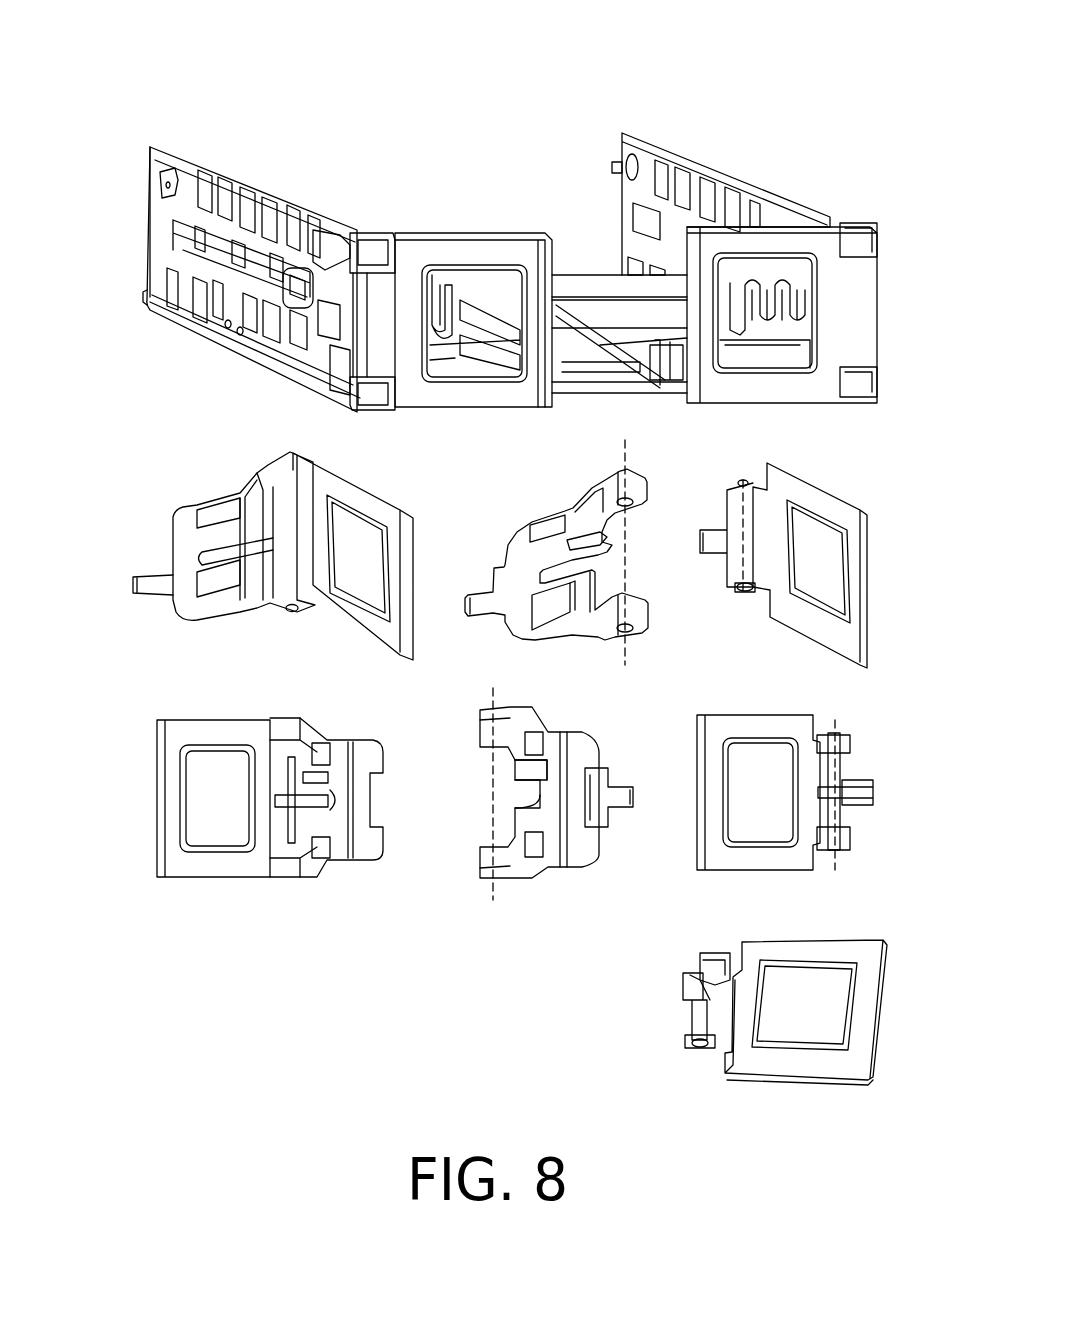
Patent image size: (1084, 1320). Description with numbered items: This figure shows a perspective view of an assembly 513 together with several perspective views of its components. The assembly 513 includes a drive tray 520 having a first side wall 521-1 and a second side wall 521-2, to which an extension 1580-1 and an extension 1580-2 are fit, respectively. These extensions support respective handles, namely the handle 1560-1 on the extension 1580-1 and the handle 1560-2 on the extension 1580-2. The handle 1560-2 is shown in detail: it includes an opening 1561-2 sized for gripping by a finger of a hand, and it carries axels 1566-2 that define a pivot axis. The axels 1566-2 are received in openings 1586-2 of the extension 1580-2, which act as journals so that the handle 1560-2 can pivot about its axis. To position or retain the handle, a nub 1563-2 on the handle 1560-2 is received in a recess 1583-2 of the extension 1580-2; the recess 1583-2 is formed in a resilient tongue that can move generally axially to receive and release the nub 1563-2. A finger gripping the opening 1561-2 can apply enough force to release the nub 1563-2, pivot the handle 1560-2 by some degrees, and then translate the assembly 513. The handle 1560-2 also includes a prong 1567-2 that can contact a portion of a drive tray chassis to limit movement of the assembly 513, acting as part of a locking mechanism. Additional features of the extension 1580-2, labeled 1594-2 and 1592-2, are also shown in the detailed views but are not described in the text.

The assembly 513 is at (706, 103).
The drive tray 520 is at (217, 162).
The first side wall 521-1 is at (732, 177).
The second side wall 521-2 is at (280, 193).
The extension 1580-1 is at (870, 220).
The extension 1580-2 is at (363, 233).
The handle 1560-1 is at (748, 387).
The handle 1560-2 is at (440, 397).
The opening 1561-2 is at (375, 518).
The openings 1586-2 is at (617, 493).
The recess 1583-2 is at (600, 550).
The axels 1566-2 is at (743, 480).
The latch block 1594-2 is at (533, 742).
The latch handle tab 1592-2 is at (623, 800).
The nub 1563-2 is at (857, 780).
The prong 1567-2 is at (685, 985).